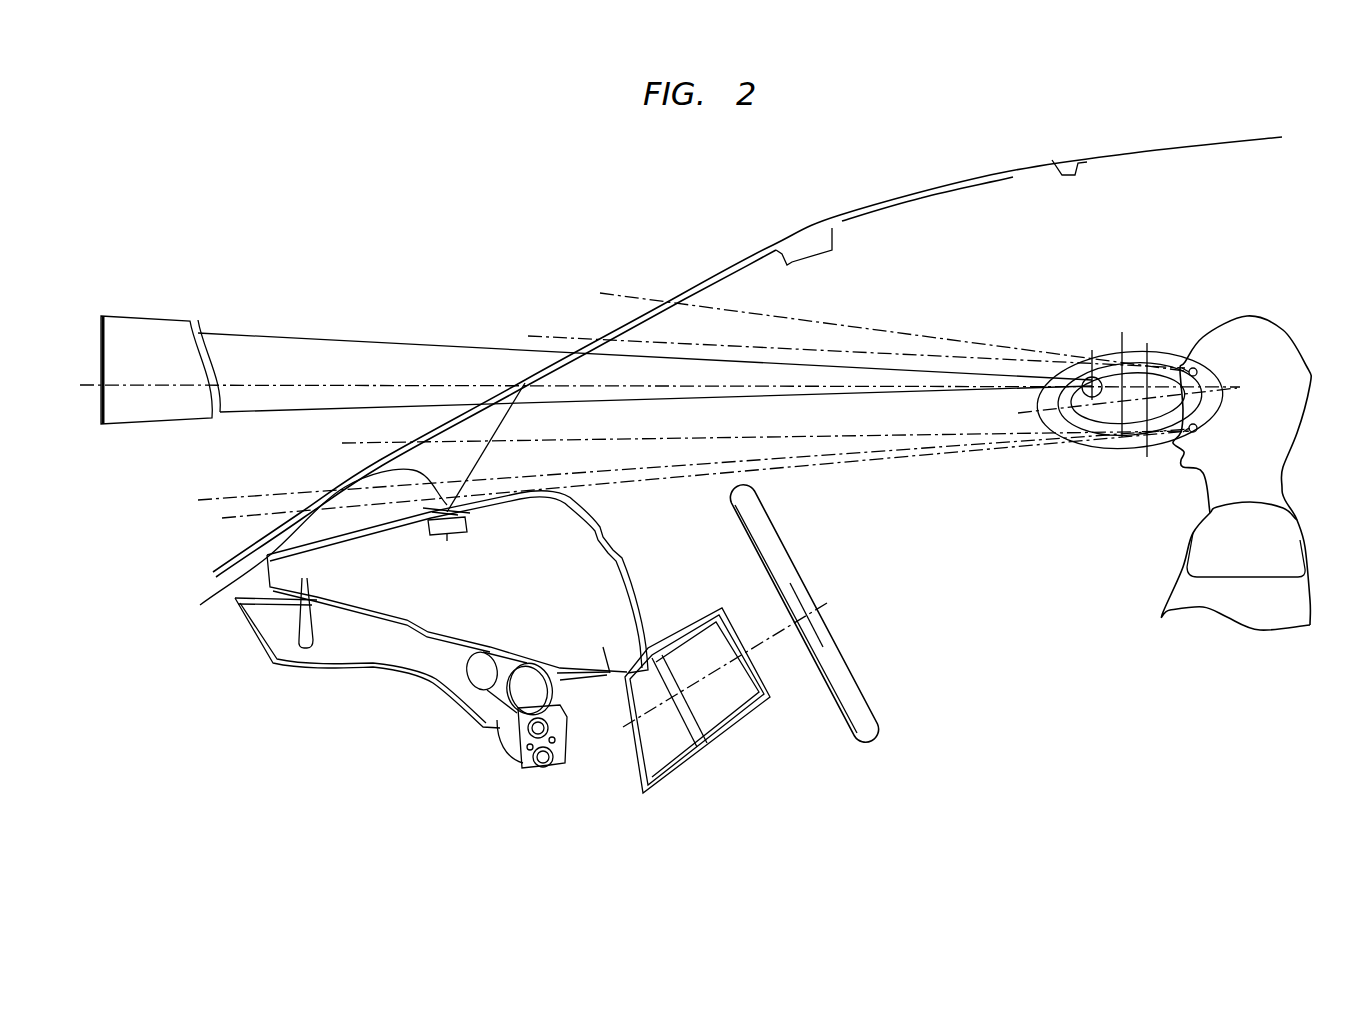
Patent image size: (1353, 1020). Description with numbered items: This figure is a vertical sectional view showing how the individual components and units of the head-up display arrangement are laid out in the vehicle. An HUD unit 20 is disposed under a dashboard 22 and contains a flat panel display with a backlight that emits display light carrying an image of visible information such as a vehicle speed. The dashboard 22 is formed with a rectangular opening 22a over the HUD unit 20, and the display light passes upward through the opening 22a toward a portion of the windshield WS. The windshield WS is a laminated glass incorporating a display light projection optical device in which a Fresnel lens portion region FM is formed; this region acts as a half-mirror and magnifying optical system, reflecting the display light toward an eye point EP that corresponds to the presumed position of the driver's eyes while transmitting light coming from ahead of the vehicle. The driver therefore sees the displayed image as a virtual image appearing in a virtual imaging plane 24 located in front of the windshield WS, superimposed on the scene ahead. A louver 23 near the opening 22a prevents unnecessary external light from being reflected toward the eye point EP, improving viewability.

The HUD unit 20 is at (438, 537).
The dashboard 22 is at (287, 567).
The opening 22a is at (443, 513).
The louver 23 is at (482, 525).
The virtual imaging plane 24 is at (102, 345).
The windshield WS is at (747, 257).
The Fresnel lens portion region FM is at (575, 338).
The eye point EP is at (1177, 360).